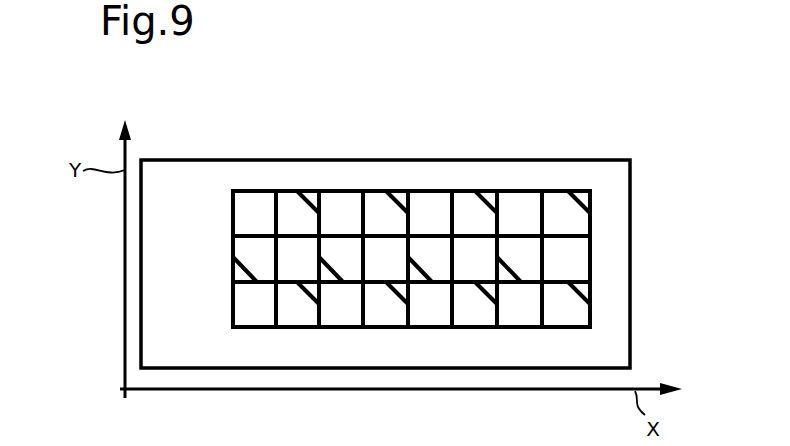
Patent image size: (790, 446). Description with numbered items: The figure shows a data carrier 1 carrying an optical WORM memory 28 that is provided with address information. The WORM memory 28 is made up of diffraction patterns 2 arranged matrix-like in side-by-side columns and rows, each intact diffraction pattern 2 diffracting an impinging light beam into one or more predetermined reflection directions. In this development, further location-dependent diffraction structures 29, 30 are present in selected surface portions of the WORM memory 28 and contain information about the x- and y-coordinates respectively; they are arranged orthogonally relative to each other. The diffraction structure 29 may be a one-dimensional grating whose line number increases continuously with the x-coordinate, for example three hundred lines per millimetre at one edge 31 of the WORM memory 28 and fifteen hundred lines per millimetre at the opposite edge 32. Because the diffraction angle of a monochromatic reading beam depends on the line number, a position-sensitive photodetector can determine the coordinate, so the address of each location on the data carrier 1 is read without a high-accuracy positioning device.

The data carrier 1 is at (185, 350).
The diffraction pattern 2 is at (284, 196).
The WORM memory 28 is at (440, 190).
The diffraction structure 29 is at (402, 195).
The diffraction structure 30 is at (417, 273).
The edge of the WORM memory 31 is at (233, 224).
The opposite edge of the WORM memory 32 is at (590, 246).